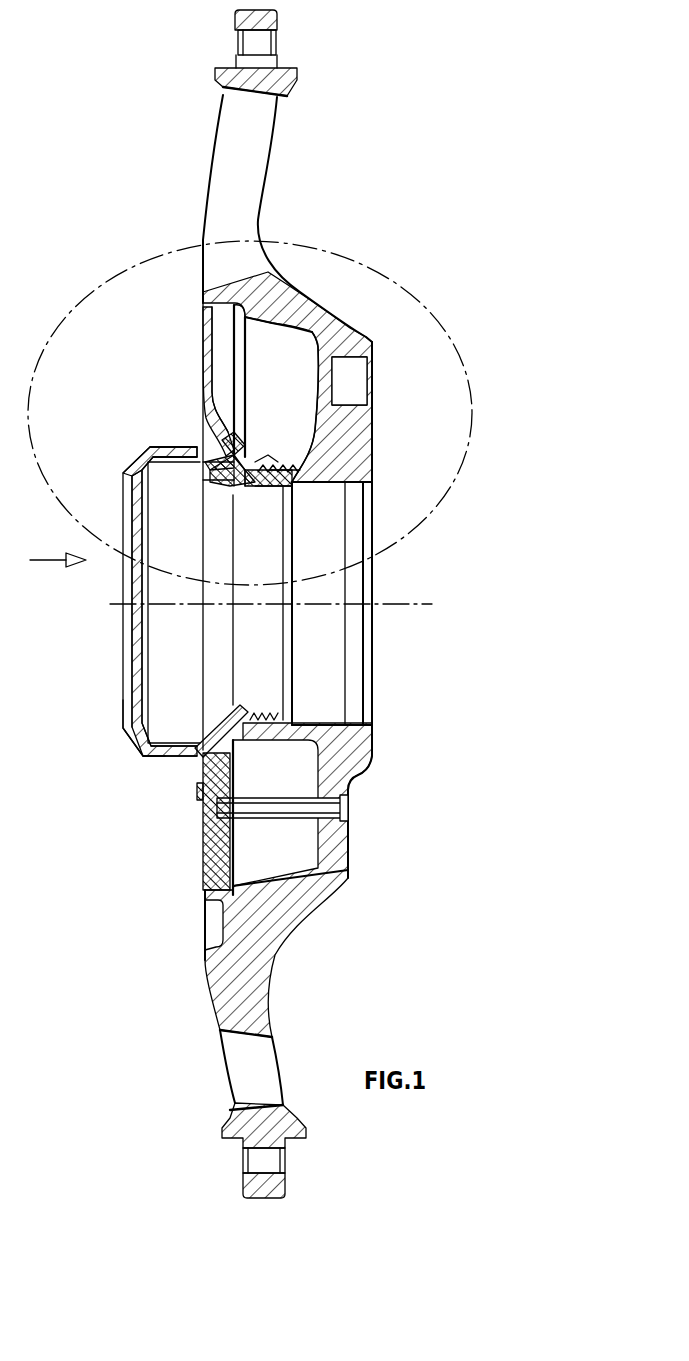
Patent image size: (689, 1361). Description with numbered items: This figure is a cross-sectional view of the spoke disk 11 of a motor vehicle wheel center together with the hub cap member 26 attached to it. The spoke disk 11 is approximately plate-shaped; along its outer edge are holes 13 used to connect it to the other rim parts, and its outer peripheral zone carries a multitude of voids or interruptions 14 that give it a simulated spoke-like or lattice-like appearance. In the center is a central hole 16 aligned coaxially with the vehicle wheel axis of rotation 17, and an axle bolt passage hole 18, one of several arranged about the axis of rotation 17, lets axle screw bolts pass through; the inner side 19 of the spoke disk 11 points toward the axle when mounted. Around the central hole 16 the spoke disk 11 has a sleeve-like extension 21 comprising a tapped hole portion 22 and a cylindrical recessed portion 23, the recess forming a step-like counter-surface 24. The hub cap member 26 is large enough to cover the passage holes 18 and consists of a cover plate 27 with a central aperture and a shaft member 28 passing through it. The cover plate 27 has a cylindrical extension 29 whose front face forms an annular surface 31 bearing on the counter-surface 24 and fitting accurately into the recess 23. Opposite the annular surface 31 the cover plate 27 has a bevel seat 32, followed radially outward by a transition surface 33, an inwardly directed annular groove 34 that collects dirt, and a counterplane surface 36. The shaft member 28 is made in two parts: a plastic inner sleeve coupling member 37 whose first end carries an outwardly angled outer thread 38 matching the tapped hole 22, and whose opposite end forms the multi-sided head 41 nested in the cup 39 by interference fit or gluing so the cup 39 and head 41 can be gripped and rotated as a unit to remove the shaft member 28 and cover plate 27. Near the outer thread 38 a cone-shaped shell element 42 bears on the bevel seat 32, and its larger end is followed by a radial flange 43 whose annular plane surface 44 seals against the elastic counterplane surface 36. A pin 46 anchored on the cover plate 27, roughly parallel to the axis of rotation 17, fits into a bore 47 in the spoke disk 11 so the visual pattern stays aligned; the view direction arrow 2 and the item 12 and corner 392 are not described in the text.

The viewing direction arrow 2 is at (58, 548).
The spoke disk 11 is at (332, 298).
The bolt head 12 is at (275, 23).
The holes 13 is at (277, 49).
The voids or interruptions 14 is at (257, 192).
The central hole 16 is at (352, 500).
The axis of rotation 17 is at (385, 605).
The axle bolt passage hole 18 is at (356, 360).
The inner side 19 is at (374, 440).
The sleeve-like extension 21 is at (308, 450).
The tapped hole portion 22 is at (278, 468).
The cylindrical recessed portion 23 is at (256, 462).
The counter-surface 24 is at (258, 489).
The hub cap member 26 is at (173, 398).
The cover plate 27 is at (218, 353).
The shaft member 28 is at (152, 448).
The cylindrical extension 29 is at (230, 486).
The annular surface 31 is at (242, 487).
The bevel seat 32 is at (226, 484).
The transition surface 33 is at (208, 485).
The annular groove 34 is at (242, 450).
The counterplane surface 36 is at (239, 414).
The inner sleeve coupling member 37 is at (272, 496).
The outer thread 38 is at (279, 478).
The cup 39 is at (128, 469).
The head 41 is at (208, 464).
The cone-shaped shell element 42 is at (226, 490).
The radial flange 43 is at (214, 459).
The annular plane surface 44 is at (210, 432).
The pin 46 is at (212, 812).
The bore 47 is at (349, 802).
The cap bottom corner 392 is at (124, 720).